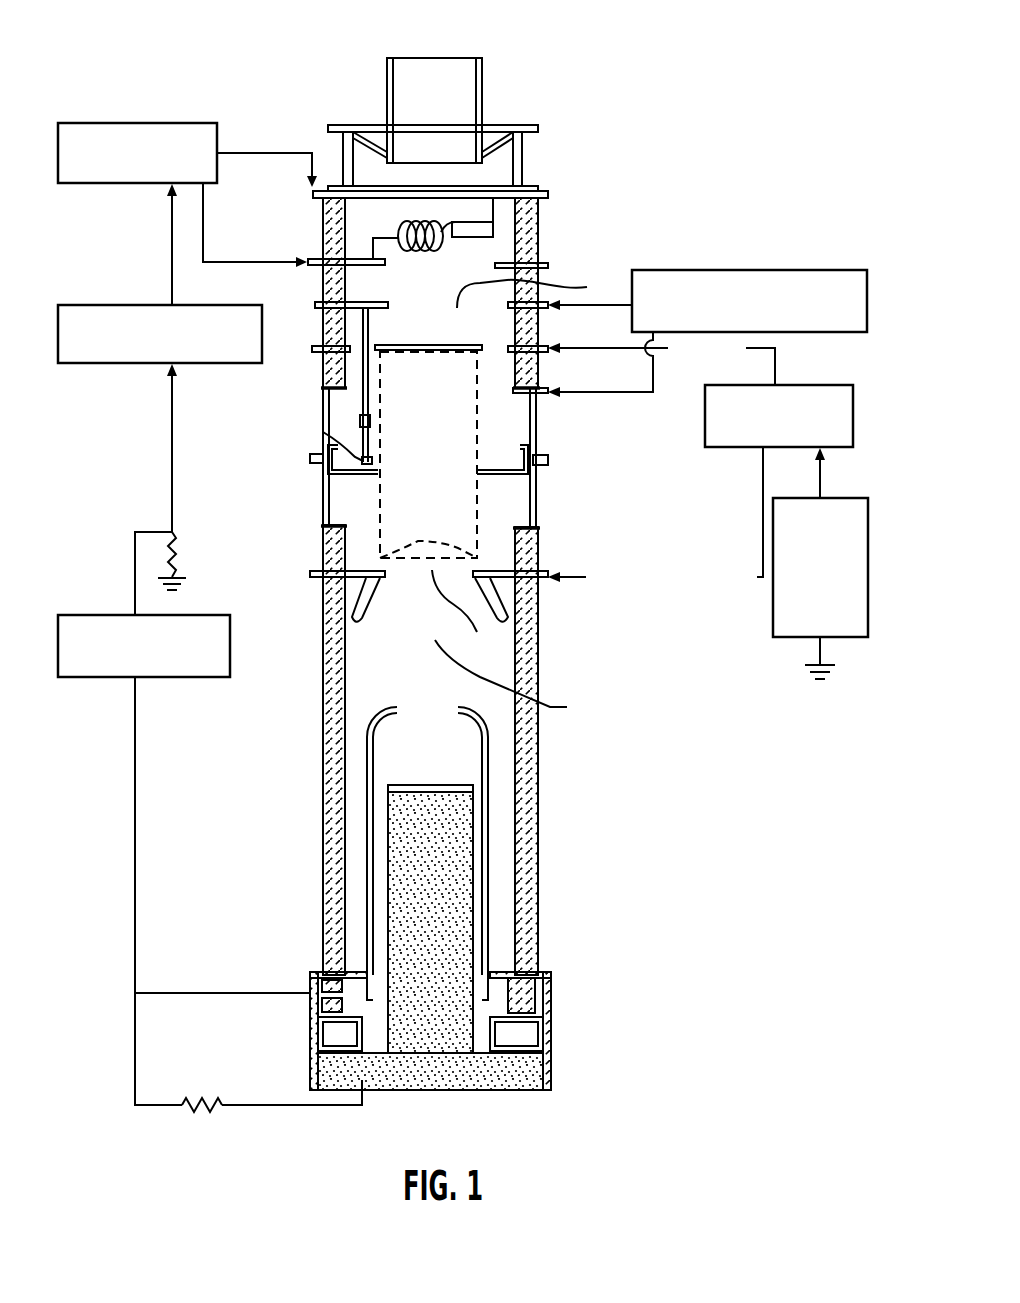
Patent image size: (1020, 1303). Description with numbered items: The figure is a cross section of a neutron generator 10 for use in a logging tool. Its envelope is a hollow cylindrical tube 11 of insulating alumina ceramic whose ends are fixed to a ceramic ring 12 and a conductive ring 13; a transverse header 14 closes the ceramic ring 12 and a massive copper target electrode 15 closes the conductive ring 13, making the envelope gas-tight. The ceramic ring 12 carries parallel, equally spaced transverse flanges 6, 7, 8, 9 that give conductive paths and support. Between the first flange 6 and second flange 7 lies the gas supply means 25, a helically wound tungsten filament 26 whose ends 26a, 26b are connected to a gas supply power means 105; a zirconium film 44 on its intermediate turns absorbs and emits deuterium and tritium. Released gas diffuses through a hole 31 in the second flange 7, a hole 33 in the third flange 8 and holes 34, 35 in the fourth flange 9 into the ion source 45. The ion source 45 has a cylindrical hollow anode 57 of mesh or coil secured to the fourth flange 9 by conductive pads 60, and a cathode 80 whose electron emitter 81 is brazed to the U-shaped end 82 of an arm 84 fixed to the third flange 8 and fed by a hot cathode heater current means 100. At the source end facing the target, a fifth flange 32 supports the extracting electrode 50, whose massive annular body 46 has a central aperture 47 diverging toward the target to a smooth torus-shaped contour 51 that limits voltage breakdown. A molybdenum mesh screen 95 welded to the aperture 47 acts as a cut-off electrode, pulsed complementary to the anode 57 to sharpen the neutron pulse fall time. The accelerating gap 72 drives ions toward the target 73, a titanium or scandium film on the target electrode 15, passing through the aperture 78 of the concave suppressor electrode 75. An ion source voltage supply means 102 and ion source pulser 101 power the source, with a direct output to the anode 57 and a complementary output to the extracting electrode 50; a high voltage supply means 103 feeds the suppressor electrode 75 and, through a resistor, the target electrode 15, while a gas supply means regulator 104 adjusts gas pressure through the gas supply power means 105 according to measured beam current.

The neutron generator 10 is at (633, 68).
The hollow cylindrical tube 11 is at (552, 676).
The ceramic ring 12 is at (580, 260).
The conductive ring 13 is at (552, 1004).
The transverse header 14 is at (522, 168).
The target electrode 15 is at (403, 927).
The first flange 6 is at (548, 193).
The second flange 7 is at (548, 266).
The third flange 8 is at (315, 303).
The fourth flange 9 is at (313, 348).
The gas supply means 25 is at (500, 240).
The helically wound filament 26 is at (540, 223).
The filament end 26a is at (493, 213).
The filament end 26b is at (318, 254).
The hole 31 is at (322, 266).
The fifth flange 32 is at (312, 569).
The hole 33 is at (533, 290).
The hole 34 is at (497, 343).
The hole 35 is at (358, 348).
The film 44 is at (398, 225).
The ion source 45 is at (556, 425).
The annular body 46 is at (497, 594).
The central aperture 47 is at (459, 614).
The extracting electrode 50 is at (355, 588).
The torus-shaped contour 51 is at (503, 614).
The cylindrical hollow anode 57 is at (478, 532).
The conductive pads 60 is at (383, 355).
The accelerating gap 72 is at (510, 681).
The target 73 is at (440, 785).
The suppressor electrode 75 is at (368, 835).
The aperture 78 is at (428, 700).
The cathode 80 is at (363, 424).
The electron emitter 81 is at (372, 461).
The U-shaped end 82 is at (350, 476).
The arm 84 is at (362, 405).
The mesh screen 95 is at (418, 541).
The hot cathode heater current means 100 is at (752, 270).
The ion source pulser 101 is at (803, 384).
The ion source voltage supply means 102 is at (835, 498).
The high voltage supply means 103 is at (90, 613).
The gas supply means regulator 104 is at (102, 364).
The gas supply power means 105 is at (88, 121).